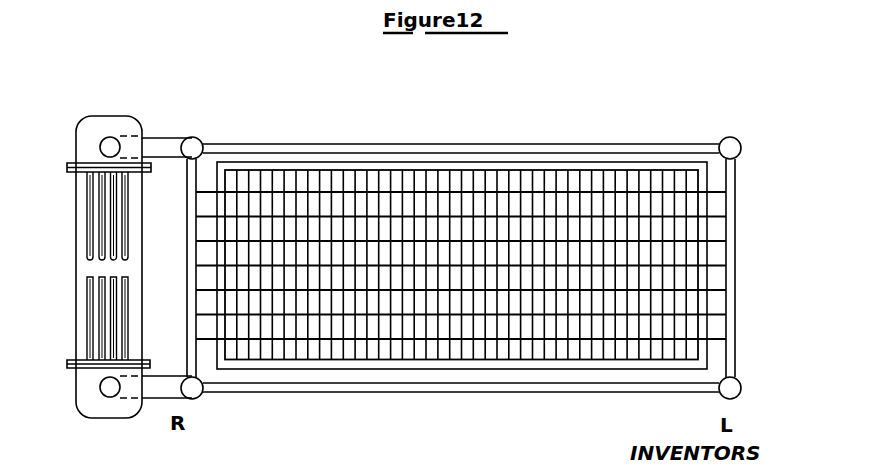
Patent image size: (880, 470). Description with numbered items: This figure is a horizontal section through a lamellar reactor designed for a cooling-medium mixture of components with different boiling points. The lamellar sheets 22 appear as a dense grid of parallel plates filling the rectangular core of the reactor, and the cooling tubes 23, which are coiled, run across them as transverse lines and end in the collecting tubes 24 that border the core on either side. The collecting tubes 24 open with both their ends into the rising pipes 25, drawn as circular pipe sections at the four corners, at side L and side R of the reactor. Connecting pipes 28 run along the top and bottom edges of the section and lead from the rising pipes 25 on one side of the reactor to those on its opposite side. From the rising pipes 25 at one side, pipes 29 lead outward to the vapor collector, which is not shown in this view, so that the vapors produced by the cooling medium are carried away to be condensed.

The lamellar sheets 22 is at (687, 267).
The cooling tubes 23 is at (208, 193).
The collecting tubes 24 is at (190, 332).
The rising pipes 25 is at (202, 142).
The connecting pipes 28 is at (300, 147).
The pipes 29 is at (167, 143).